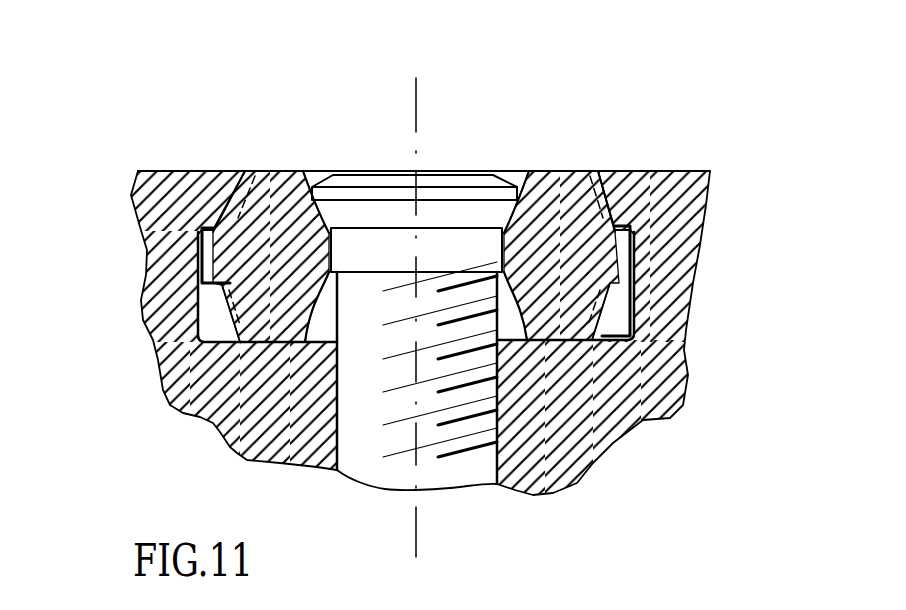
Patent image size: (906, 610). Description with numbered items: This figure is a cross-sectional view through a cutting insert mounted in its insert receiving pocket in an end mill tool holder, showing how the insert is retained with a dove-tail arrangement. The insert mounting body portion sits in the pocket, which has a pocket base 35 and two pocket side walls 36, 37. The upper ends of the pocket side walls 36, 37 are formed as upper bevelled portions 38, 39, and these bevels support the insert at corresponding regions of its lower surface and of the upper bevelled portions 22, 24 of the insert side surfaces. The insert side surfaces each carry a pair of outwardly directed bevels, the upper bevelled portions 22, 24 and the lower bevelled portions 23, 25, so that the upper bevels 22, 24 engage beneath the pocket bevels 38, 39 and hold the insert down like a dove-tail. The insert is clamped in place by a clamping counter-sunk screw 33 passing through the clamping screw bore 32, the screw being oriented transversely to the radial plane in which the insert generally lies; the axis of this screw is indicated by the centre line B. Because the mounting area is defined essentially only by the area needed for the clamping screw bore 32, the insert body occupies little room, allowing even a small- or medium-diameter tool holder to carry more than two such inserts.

The upper bevelled portion 22 is at (583, 197).
The lower bevelled portion 23 is at (605, 304).
The upper bevelled portion 24 is at (237, 195).
The lower bevelled portion 25 is at (240, 307).
The clamping screw bore 32 is at (513, 173).
The clamping counter-sunk screw 33 is at (377, 207).
The pocket base 35 is at (571, 336).
The pocket side wall 36 is at (638, 277).
The pocket side wall 37 is at (187, 267).
The upper bevelled portion of pocket side wall 38 is at (628, 198).
The upper bevelled portion of pocket side wall 39 is at (231, 203).
The bolt axis B is at (417, 106).